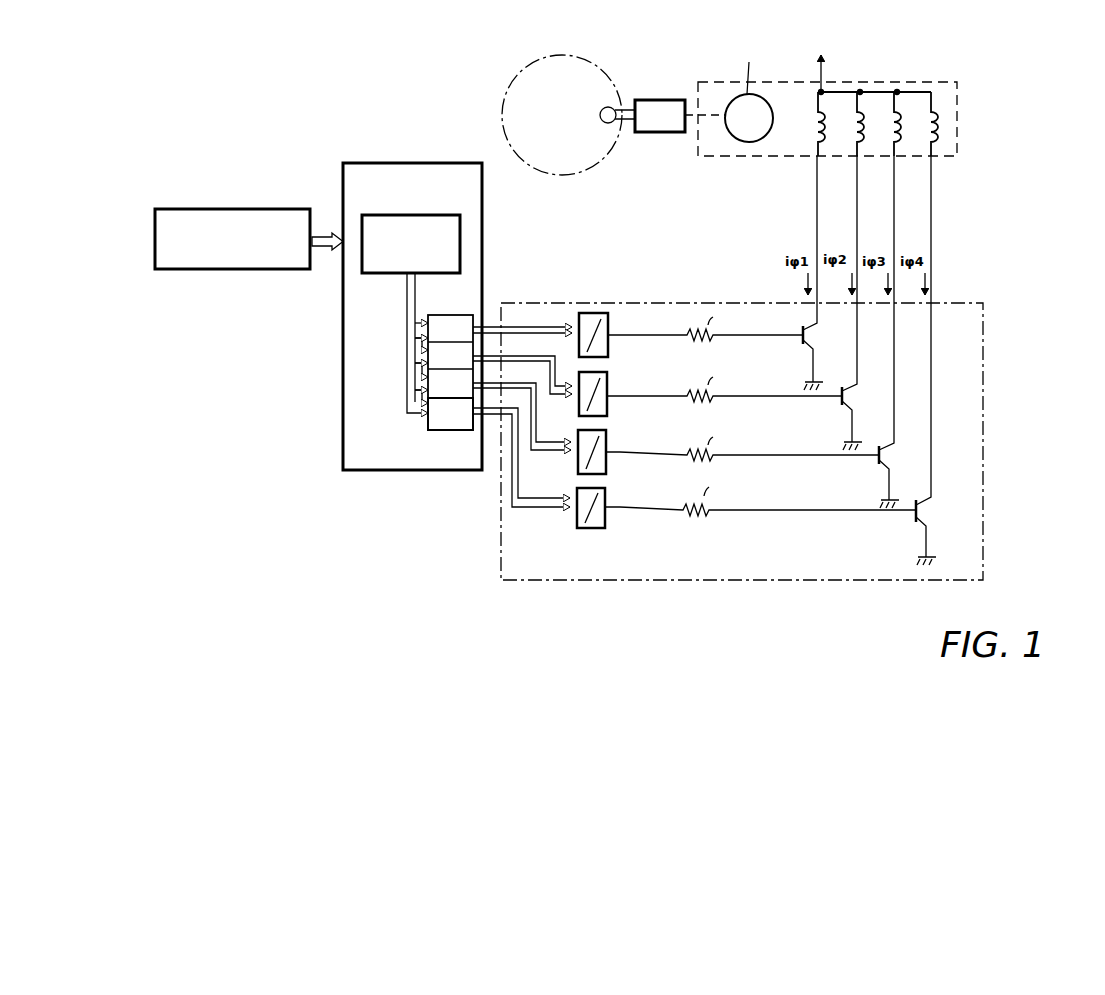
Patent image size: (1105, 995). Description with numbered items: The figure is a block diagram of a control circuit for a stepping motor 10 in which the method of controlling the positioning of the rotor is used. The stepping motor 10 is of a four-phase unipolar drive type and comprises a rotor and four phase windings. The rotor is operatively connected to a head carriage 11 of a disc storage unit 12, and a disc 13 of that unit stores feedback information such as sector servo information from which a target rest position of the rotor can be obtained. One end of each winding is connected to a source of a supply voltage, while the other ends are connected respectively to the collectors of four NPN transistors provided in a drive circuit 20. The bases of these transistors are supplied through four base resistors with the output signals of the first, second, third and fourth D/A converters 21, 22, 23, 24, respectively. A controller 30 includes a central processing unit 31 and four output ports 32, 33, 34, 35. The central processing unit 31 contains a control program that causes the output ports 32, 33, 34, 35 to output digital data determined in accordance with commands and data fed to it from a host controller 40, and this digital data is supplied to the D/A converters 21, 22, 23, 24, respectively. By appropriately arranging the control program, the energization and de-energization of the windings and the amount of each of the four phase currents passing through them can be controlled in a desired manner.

The stepping motor 10 is at (958, 127).
The head carriage 11 is at (663, 100).
The disc storage unit 12 is at (650, 35).
The disc 13 is at (600, 165).
The drive circuit 20 is at (985, 362).
The D/A converter 21 is at (612, 326).
The D/A converter 22 is at (609, 382).
The D/A converter 23 is at (608, 437).
The D/A converter 24 is at (608, 503).
The controller 30 is at (447, 163).
The central processing unit 31 is at (433, 216).
The output port 32 is at (450, 315).
The output port 33 is at (417, 340).
The output port 34 is at (417, 377).
The output port 35 is at (447, 430).
The host controller 40 is at (265, 209).